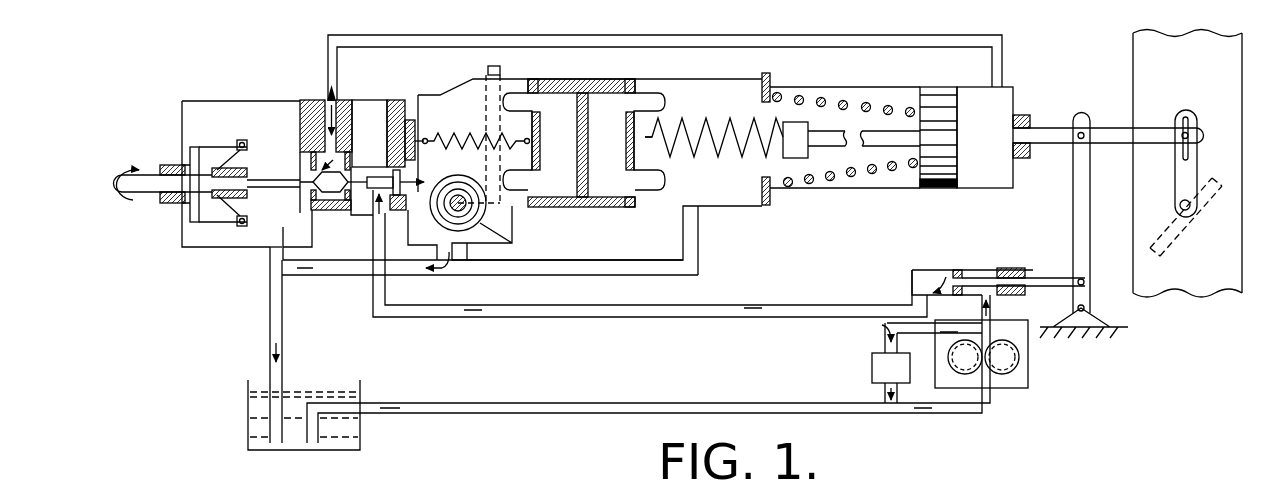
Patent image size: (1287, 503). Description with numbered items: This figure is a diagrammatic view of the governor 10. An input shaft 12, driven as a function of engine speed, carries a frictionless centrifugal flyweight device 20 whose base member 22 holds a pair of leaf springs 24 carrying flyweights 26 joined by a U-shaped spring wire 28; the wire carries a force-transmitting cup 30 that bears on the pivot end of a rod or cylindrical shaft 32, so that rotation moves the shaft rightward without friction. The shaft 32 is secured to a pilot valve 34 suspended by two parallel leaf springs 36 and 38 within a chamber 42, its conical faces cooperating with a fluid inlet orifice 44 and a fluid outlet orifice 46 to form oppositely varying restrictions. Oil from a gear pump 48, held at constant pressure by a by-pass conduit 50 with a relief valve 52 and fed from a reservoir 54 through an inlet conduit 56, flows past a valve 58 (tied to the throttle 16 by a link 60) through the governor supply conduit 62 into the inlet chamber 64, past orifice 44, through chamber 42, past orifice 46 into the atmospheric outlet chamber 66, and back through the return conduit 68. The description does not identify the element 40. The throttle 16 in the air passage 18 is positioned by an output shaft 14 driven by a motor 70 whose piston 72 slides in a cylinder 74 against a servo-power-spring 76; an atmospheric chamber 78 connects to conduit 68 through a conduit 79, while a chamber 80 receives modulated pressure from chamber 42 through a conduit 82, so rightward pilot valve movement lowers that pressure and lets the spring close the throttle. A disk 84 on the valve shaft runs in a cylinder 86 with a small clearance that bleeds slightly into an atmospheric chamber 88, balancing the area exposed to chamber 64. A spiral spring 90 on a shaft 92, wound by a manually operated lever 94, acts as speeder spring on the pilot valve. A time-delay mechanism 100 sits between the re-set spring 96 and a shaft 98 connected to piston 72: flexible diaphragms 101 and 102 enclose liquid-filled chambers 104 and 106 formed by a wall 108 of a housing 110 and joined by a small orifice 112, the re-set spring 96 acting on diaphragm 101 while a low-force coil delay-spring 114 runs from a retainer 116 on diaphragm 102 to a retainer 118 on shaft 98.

The governor 10 is at (229, 303).
The input shaft 12 is at (167, 204).
The output shaft 14 is at (1058, 127).
The throttle 16 is at (1166, 222).
The passage 18 is at (1242, 165).
The frictionless centrifugal flyweight device 20 is at (216, 130).
The base member 22 is at (182, 232).
The leaf springs 24 is at (197, 150).
The flyweights 26 is at (247, 143).
The spring wire 28 is at (240, 160).
The force-transmitting cup 30 is at (212, 170).
The rod or cylindrical shaft 32 is at (291, 188).
The pilot valve 34 is at (332, 210).
The leaf spring 36 is at (291, 100).
The leaf spring 38 is at (418, 126).
The supply passage 40 is at (313, 100).
The chamber 42 is at (340, 210).
The fluid inlet orifice 44 is at (340, 170).
The fluid outlet orifice 46 is at (312, 200).
The gear pump 48 is at (1028, 367).
The by-pass conduit 50 is at (885, 329).
The relief valve 52 is at (872, 371).
The reservoir 54 is at (362, 392).
The inlet conduit 56 is at (622, 403).
The valve 58 is at (967, 270).
The link 60 is at (1091, 197).
The governor supply conduit 62 is at (752, 310).
The inlet chamber 64 is at (360, 100).
The atmospheric outlet chamber 66 is at (246, 250).
The return conduit 68 is at (285, 353).
The motor 70 is at (936, 86).
The piston 72 is at (905, 110).
The cylinder 74 is at (886, 190).
The servo-power-spring 76 is at (868, 189).
The chamber 78 is at (808, 99).
The conduit 79 is at (700, 238).
The chamber 80 is at (980, 178).
The conduit 82 is at (468, 36).
The disk 84 is at (388, 170).
The cylinder 86 is at (412, 213).
The atmospheric chamber 88 is at (473, 82).
The spiral spring 90 is at (486, 230).
The shaft 92 is at (462, 210).
The manually operated lever 94 is at (502, 210).
The re-set spring 96 is at (477, 157).
The shaft 98 is at (856, 131).
The time-delay mechanism 100 is at (621, 210).
The flexible diaphragm 101 is at (518, 79).
The flexible diaphragm 102 is at (665, 84).
The chamber 104 is at (548, 137).
The chamber 106 is at (612, 134).
The wall 108 is at (563, 79).
The housing 110 is at (620, 79).
The small orifice 112 is at (612, 203).
The coil delay-spring 114 is at (712, 122).
The retainer 116 is at (662, 155).
The retainer 118 is at (783, 126).